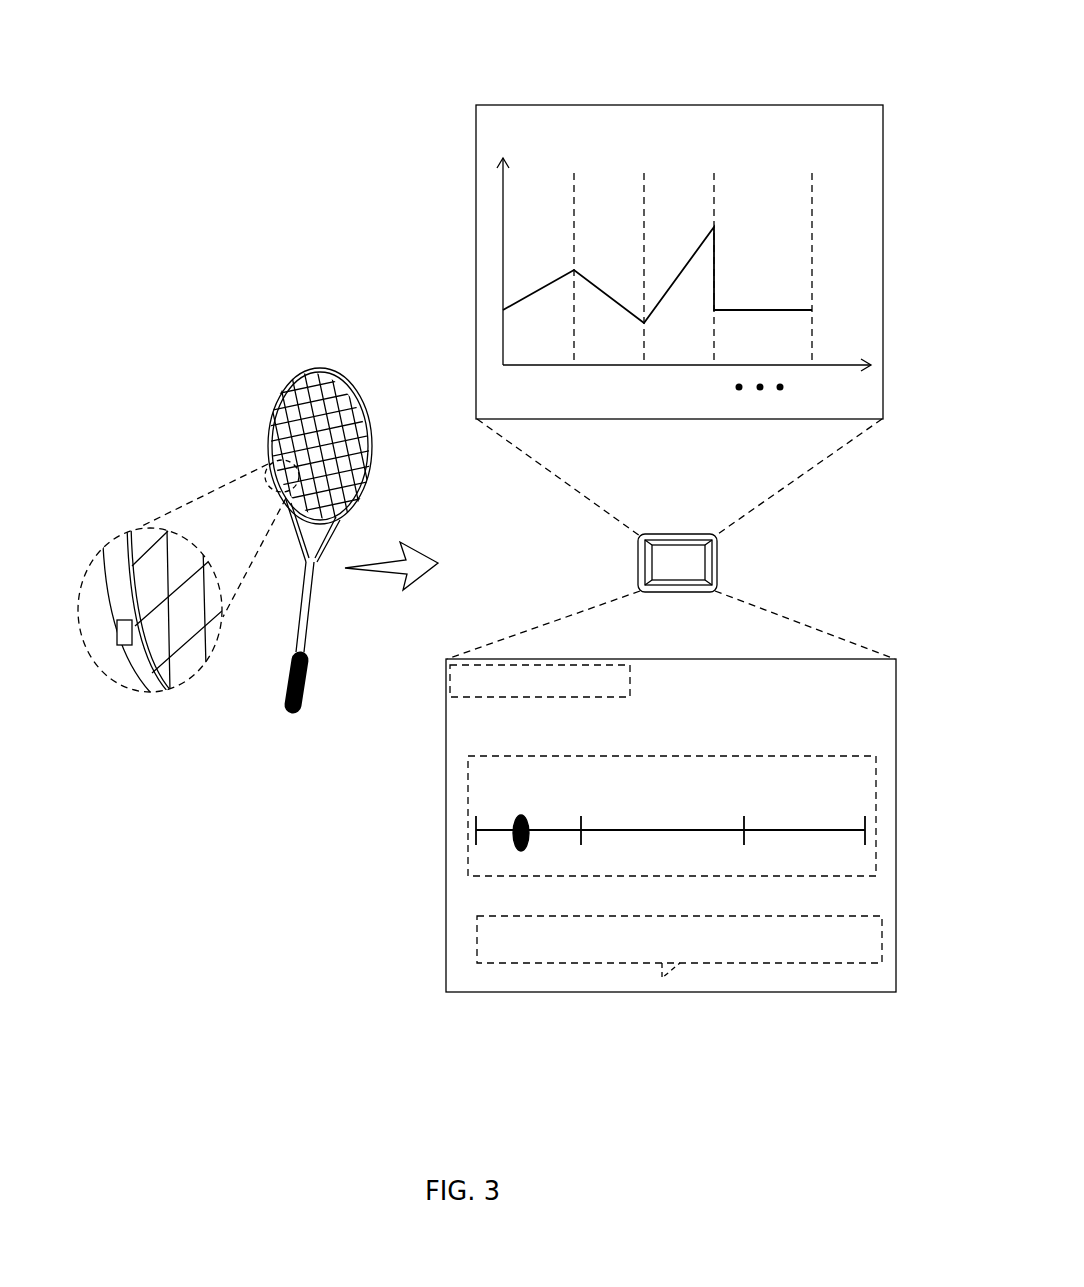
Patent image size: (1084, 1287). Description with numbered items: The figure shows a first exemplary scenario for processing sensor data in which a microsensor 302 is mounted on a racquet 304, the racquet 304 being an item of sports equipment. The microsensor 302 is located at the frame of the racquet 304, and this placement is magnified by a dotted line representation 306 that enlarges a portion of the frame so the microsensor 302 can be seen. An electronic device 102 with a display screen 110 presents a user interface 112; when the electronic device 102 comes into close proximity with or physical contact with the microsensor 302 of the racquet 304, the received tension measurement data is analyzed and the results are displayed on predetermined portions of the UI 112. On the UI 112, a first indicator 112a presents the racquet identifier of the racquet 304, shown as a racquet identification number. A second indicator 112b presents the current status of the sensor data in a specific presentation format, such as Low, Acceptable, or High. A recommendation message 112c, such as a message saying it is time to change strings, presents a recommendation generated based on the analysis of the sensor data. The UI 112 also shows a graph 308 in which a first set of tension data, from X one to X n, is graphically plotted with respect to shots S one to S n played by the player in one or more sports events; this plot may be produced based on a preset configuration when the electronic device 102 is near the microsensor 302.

The electronic device 102 is at (640, 548).
The display screen 110 is at (715, 547).
The user interface (UI) 112 is at (705, 573).
The first indicator 112a is at (528, 665).
The second indicator 112b is at (487, 877).
The recommendation message 112c is at (637, 963).
The microsensor 302 is at (123, 645).
The racquet 304 is at (370, 438).
The dotted line representation 306 is at (79, 590).
The graph 308 is at (783, 150).